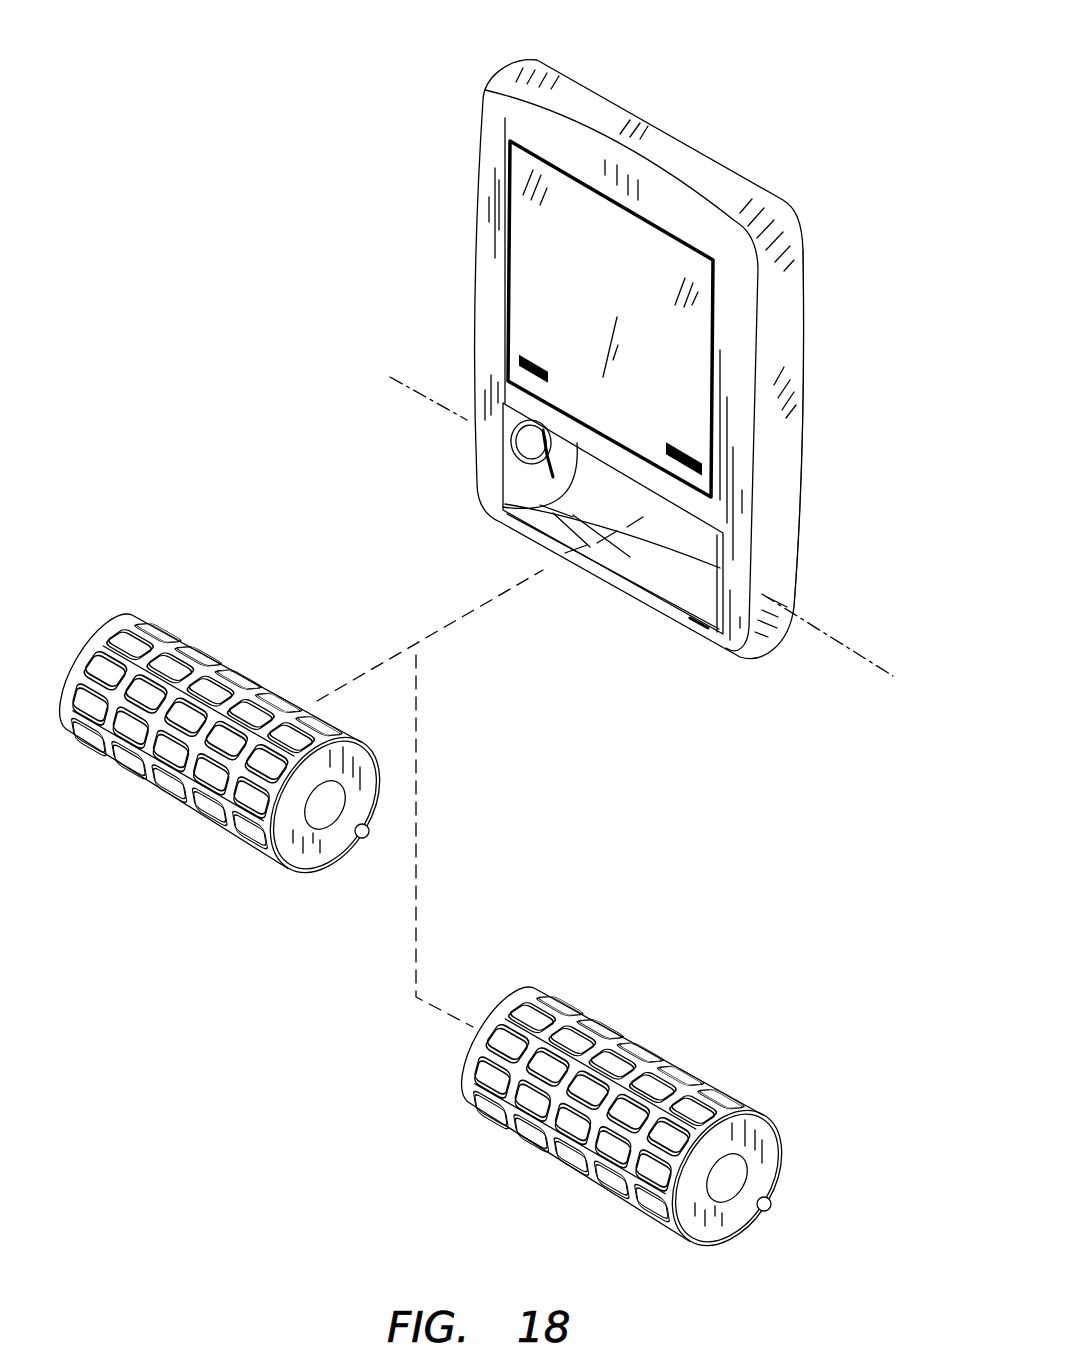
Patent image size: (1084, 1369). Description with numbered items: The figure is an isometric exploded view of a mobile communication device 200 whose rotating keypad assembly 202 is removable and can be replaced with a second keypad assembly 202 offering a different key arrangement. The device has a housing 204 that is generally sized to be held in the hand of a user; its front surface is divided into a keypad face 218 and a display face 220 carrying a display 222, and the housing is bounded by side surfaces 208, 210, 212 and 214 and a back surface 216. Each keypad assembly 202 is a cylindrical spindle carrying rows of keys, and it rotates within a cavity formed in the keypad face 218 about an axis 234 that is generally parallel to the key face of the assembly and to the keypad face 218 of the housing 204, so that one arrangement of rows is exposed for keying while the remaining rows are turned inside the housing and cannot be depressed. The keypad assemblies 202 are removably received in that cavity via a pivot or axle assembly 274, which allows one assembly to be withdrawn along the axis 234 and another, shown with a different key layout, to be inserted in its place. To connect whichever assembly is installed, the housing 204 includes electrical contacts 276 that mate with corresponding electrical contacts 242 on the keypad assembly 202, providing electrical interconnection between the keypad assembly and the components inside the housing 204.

The mobile communication device 200 is at (802, 147).
The rotating keypad assembly 202 is at (132, 610).
The housing 204 is at (797, 309).
The side surface 208 is at (786, 442).
The side surface 210 is at (683, 153).
The side surface 212 is at (471, 170).
The side surface 214 is at (577, 577).
The back surface 216 is at (805, 528).
The keypad face 218 is at (478, 390).
The display face 220 is at (481, 222).
The display 222 is at (563, 187).
The axis 234 is at (841, 641).
The electrical contacts 242 is at (360, 832).
The pivot or axle assembly 274 is at (513, 460).
The electrical contacts 276 is at (687, 560).